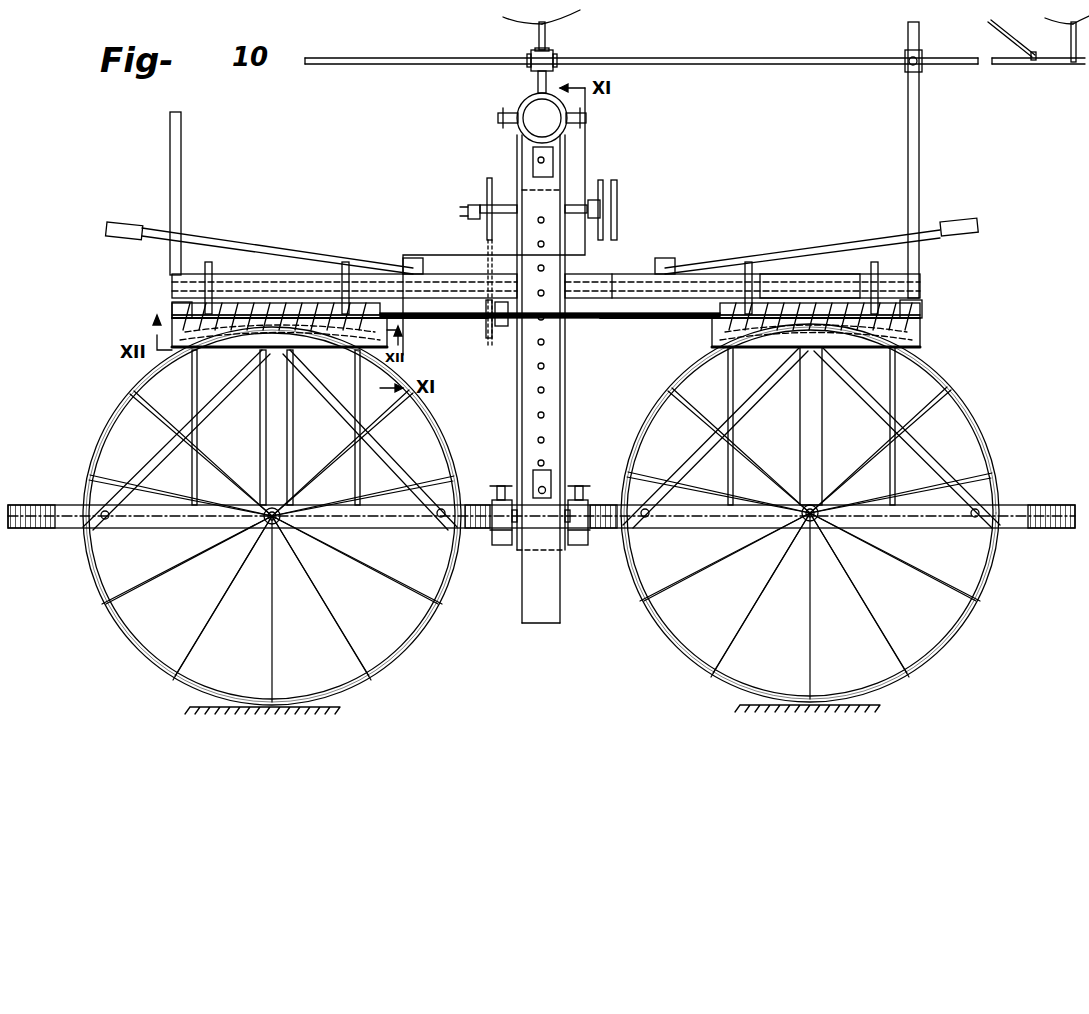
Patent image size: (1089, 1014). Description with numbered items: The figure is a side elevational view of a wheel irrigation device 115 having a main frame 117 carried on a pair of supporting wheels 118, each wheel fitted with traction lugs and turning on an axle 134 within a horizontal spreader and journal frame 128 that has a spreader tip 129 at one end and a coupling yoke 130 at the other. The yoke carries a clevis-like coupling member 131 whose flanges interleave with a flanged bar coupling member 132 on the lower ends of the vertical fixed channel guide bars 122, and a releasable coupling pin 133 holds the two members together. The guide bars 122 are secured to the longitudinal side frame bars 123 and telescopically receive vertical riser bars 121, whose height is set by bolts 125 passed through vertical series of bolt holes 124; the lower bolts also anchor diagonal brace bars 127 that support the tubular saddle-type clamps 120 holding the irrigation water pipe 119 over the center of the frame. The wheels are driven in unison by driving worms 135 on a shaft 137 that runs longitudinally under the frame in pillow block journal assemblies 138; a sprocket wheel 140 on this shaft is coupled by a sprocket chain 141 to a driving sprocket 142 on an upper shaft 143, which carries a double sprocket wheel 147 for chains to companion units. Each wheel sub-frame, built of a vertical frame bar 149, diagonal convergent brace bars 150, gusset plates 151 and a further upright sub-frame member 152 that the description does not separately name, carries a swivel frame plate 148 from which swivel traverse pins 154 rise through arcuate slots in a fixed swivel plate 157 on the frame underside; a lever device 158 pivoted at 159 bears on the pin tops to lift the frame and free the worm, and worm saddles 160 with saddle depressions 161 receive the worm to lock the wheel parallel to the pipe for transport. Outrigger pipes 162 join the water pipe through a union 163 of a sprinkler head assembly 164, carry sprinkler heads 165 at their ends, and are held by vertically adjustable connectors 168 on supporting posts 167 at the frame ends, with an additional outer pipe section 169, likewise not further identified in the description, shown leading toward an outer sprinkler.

The wheel irrigation device 115 is at (920, 268).
The main frame 117 is at (845, 285).
The supporting wheels 118 is at (402, 640).
The irrigation water pipe 119 is at (518, 112).
The tubular saddle-type clamps 120 is at (535, 95).
The vertical riser bars 121 is at (556, 170).
The vertical fixed channel guide bars 122 is at (571, 200).
The longitudinal side frame bars 123 is at (628, 272).
The bolt holes 124 is at (537, 368).
The bolts 125 is at (538, 217).
The diagonal brace bars 127 is at (535, 165).
The spreader and journal frame 128 is at (370, 525).
The spreader tip 129 is at (40, 528).
The coupling yoke 130 is at (500, 545).
The clevis-like coupling member 131 is at (478, 530).
The flanged bar coupling member 132 is at (565, 520).
The releasable coupling pin 133 is at (497, 492).
The axle 134 is at (265, 528).
The driving worms 135 is at (285, 310).
The shaft 137 is at (598, 318).
The pillow block journal assemblies 138 is at (172, 306).
The sprocket wheel 140 is at (486, 338).
The sprocket chain 141 is at (487, 268).
The driving sprocket 142 is at (487, 190).
The shaft 143 is at (500, 222).
The double sprocket wheel 147 is at (604, 214).
The swivel frame plate 148 is at (135, 653).
The vertical frame bar 149 is at (868, 474).
The diagonal convergent brace bars 150 is at (165, 448).
The gusset plates 151 is at (745, 378).
The upright post 152 is at (192, 385).
The swivel traverse pins 154 is at (235, 262).
The fixed swivel plate 157 is at (395, 300).
The lever device 158 is at (348, 262).
The pivot 159 is at (410, 262).
The worm saddles 160 is at (178, 348).
The saddle depressions 161 is at (272, 305).
The outrigger pipes 162 is at (331, 66).
The union 163 is at (553, 58).
The sprinkler head assembly 164 is at (536, 37).
The sprinkler heads 165 is at (1071, 50).
The supporting posts 167 is at (181, 168).
The vertically adjustable connectors 168 is at (905, 70).
The branch pipe 169 is at (988, 26).